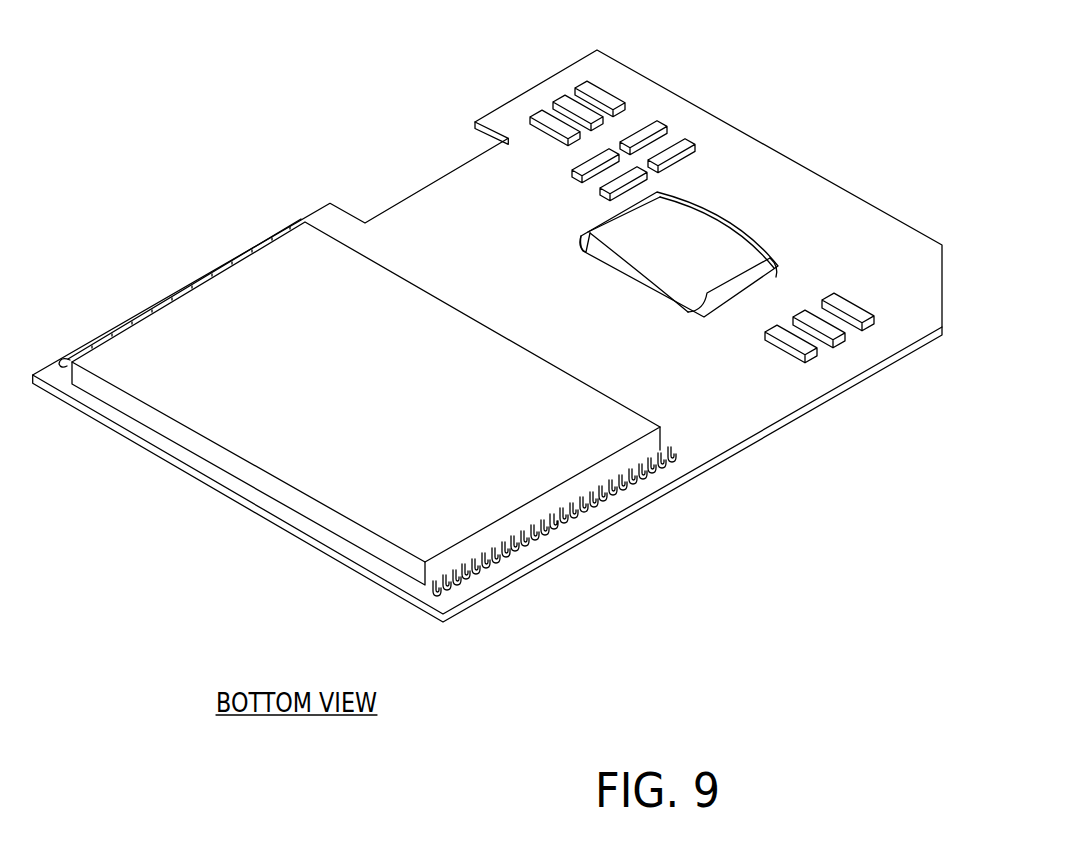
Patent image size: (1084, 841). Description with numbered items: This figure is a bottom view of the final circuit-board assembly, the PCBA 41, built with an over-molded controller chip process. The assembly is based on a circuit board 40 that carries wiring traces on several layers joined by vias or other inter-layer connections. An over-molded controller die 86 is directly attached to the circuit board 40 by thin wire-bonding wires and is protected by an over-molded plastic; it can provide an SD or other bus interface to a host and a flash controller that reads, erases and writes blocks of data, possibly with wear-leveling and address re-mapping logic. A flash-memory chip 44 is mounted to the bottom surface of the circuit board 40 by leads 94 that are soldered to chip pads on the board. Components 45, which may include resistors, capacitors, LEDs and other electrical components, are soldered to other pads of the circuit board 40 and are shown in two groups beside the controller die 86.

The circuit board 40 is at (527, 257).
The PCBA 41 is at (487, 314).
The flash-memory chip 44 is at (383, 410).
The components 45 is at (612, 93).
The over-molded controller die 86 is at (697, 247).
The leads 94 is at (540, 535).